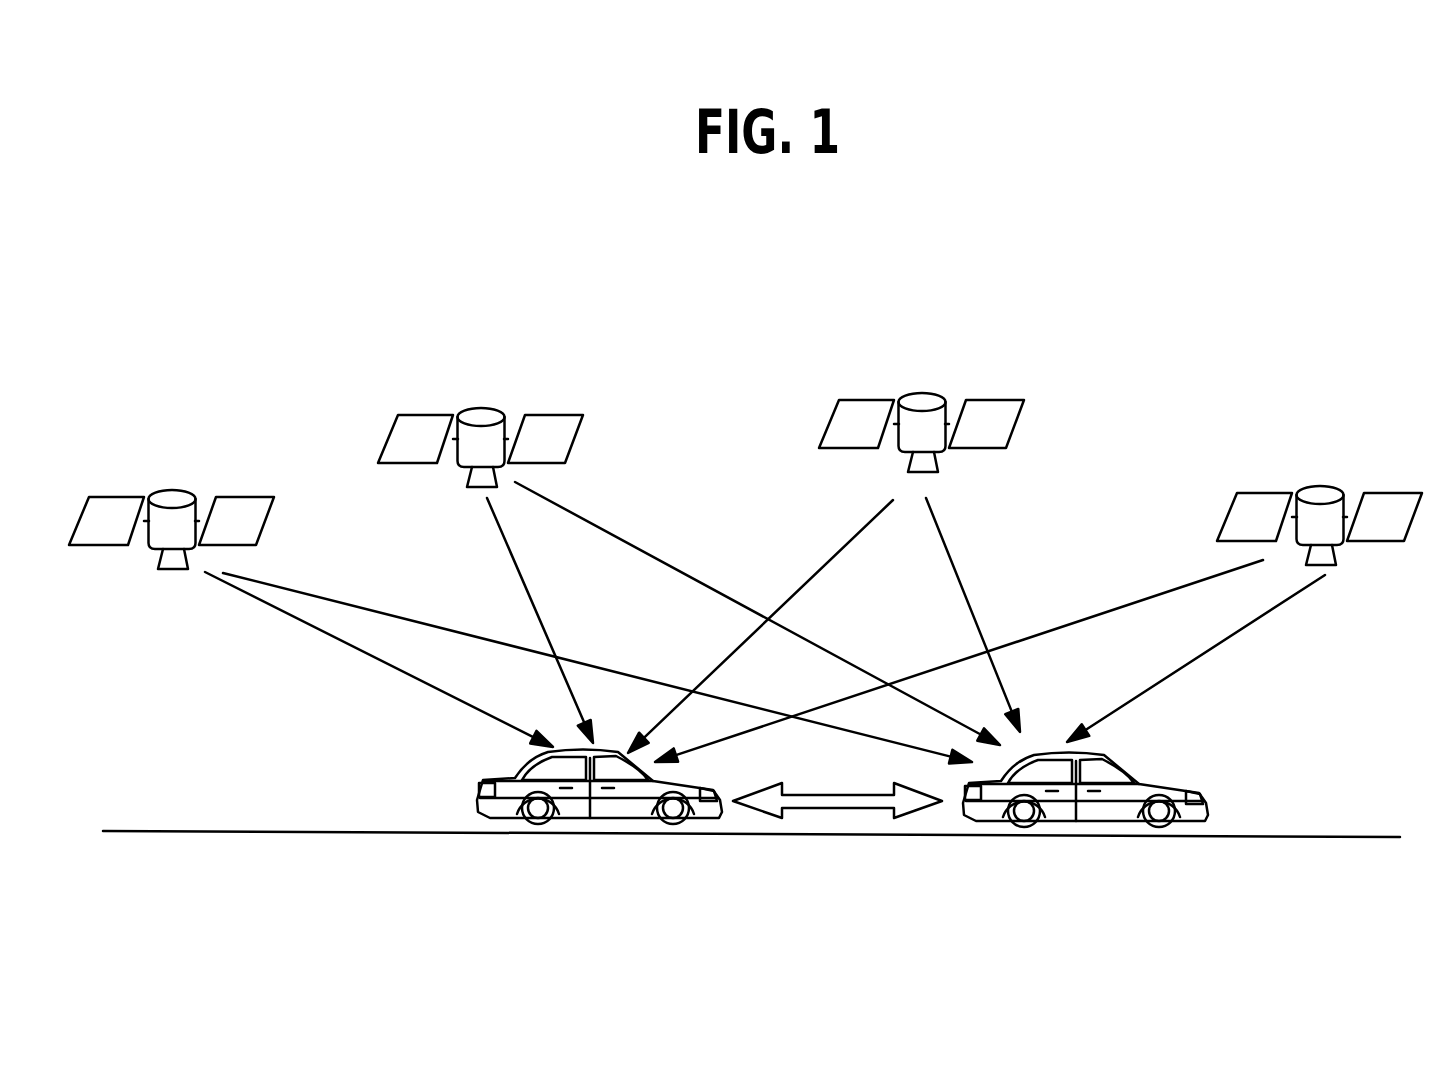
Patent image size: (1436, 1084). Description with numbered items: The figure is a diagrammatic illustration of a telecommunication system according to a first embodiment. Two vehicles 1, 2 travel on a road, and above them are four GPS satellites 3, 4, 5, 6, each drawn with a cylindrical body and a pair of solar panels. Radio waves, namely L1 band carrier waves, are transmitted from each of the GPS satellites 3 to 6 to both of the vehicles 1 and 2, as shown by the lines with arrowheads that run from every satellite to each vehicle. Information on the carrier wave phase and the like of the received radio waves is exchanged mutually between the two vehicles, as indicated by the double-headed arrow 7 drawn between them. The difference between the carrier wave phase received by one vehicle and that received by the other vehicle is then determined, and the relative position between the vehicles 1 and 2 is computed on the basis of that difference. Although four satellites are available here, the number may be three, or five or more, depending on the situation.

The vehicle 1 is at (630, 818).
The vehicle 2 is at (1112, 820).
The GPS satellite 3 is at (520, 582).
The GPS satellite 4 is at (689, 532).
The GPS satellite 5 is at (826, 529).
The GPS satellite 6 is at (1038, 580).
The arrow 7 is at (840, 808).